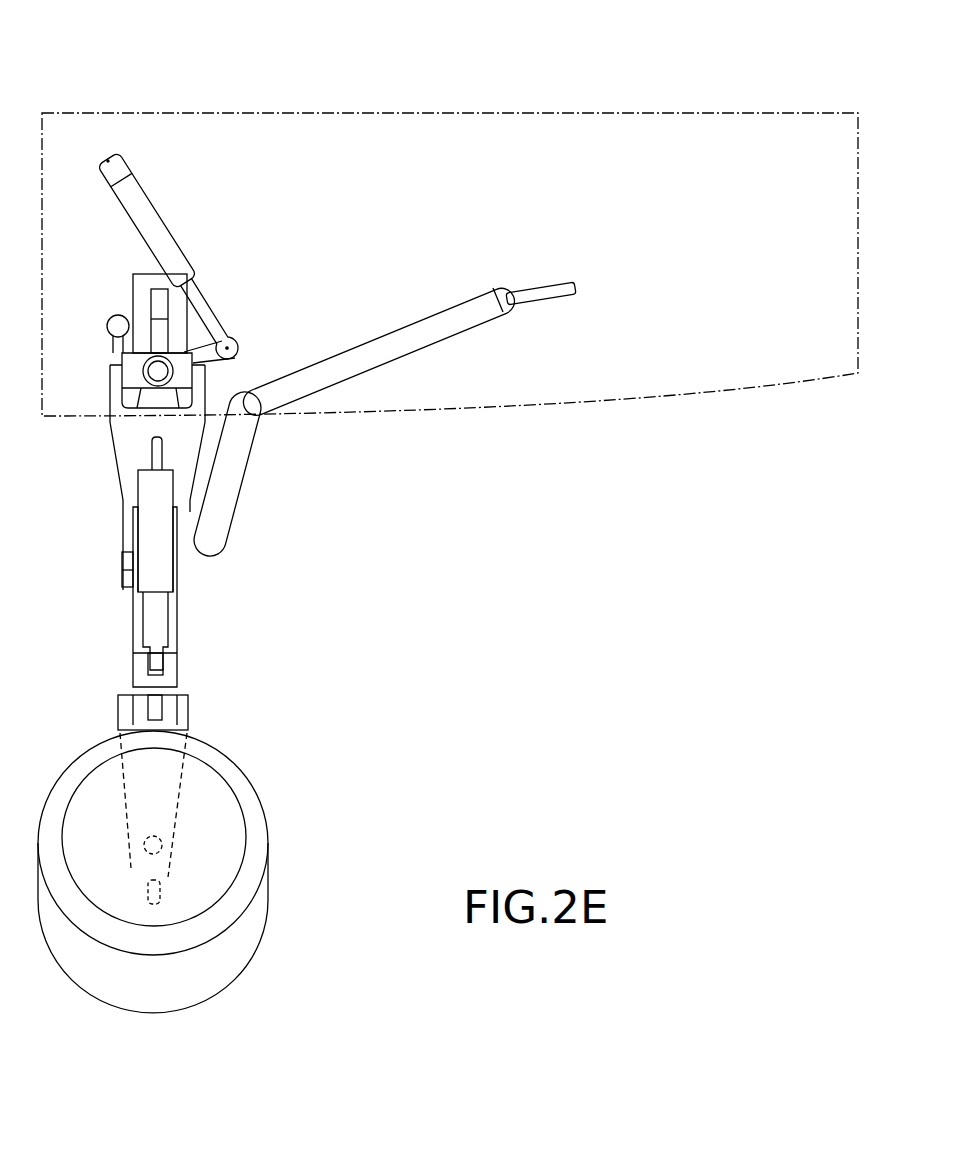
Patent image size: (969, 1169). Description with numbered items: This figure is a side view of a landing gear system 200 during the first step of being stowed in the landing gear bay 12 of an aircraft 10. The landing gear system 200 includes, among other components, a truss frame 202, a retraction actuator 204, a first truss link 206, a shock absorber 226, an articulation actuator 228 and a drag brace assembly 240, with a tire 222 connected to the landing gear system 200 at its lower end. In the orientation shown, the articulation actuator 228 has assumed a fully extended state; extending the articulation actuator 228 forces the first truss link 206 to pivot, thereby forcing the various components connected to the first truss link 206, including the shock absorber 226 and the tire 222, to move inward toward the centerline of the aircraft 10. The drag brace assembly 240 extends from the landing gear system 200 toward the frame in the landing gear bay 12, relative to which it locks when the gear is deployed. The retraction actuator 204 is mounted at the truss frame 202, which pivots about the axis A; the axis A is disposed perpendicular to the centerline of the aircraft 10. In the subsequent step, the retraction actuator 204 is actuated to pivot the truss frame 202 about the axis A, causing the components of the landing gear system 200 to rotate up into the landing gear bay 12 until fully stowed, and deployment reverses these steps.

The aircraft 10 is at (203, 86).
The landing gear bay 12 is at (820, 378).
The landing gear system 200 is at (345, 629).
The truss frame 202 is at (133, 363).
The retraction actuator 204 is at (167, 242).
The first truss link 206 is at (110, 437).
The tire 222 is at (253, 807).
The shock absorber 226 is at (167, 570).
The articulation actuator 228 is at (117, 316).
The drag brace assembly 240 is at (468, 322).
The axis A is at (157, 371).